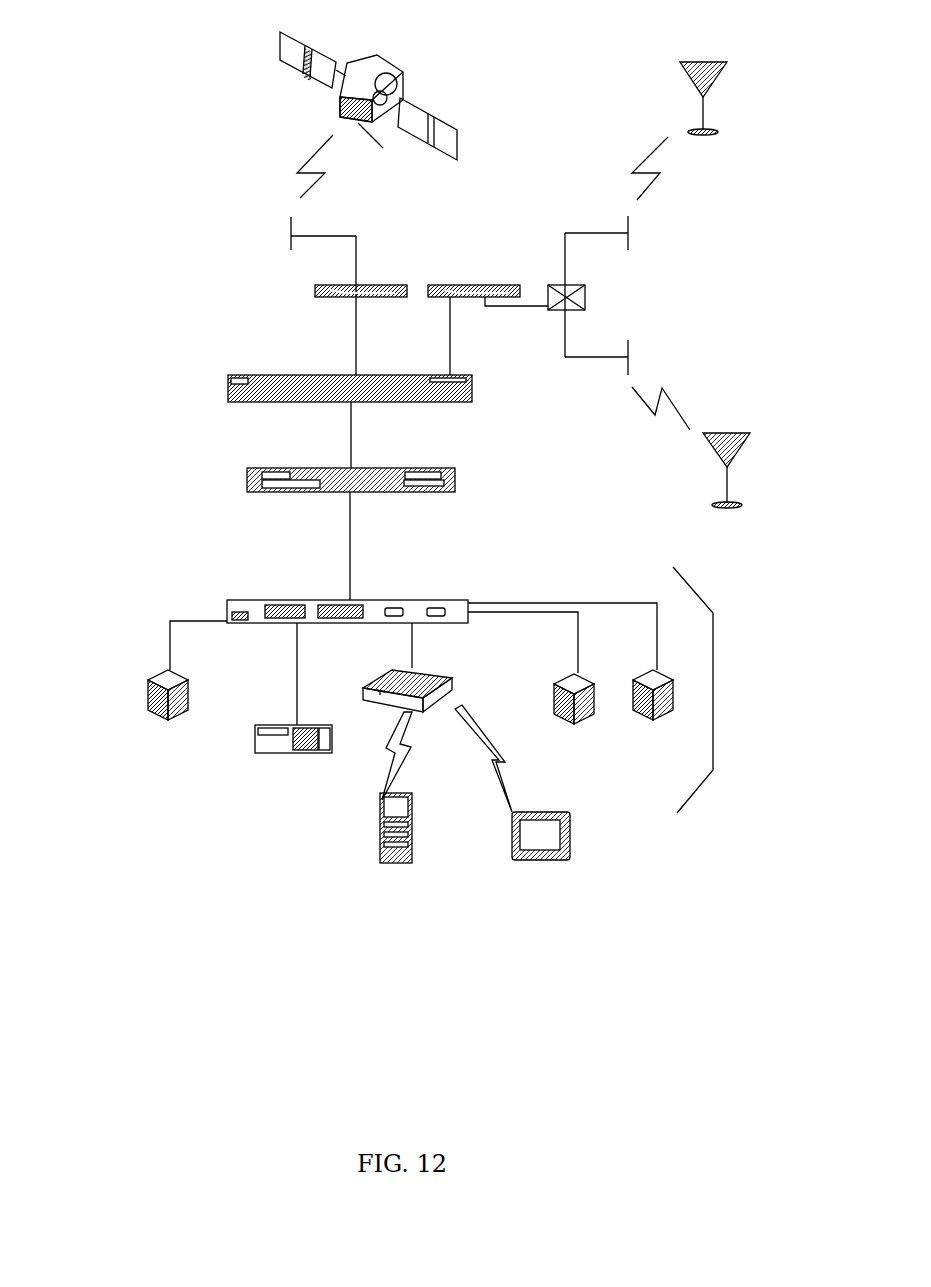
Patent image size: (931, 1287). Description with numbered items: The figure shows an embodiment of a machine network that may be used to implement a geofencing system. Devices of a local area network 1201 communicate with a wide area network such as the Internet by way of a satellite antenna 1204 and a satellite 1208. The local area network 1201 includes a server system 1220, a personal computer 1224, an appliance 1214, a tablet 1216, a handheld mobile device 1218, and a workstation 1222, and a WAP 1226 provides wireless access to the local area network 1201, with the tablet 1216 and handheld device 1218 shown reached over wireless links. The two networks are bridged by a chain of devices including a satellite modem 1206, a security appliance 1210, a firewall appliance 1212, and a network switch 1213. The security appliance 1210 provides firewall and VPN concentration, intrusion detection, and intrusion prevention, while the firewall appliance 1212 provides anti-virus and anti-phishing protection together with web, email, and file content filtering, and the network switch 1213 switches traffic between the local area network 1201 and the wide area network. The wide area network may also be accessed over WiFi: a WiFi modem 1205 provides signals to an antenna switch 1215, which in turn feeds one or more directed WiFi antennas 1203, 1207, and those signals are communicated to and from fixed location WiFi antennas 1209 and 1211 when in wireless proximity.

The local area network (LAN) 1201 is at (724, 690).
The directed WiFi antenna 1203 is at (675, 237).
The satellite antenna 1204 is at (234, 233).
The WiFi modem 1205 is at (478, 306).
The satellite modem 1206 is at (264, 290).
The directed WiFi antenna 1207 is at (675, 362).
The satellite 1208 is at (370, 110).
The fixed location WiFi antenna 1209 is at (726, 72).
The security appliance 1210 is at (252, 388).
The fixed location WiFi antenna 1211 is at (661, 470).
The firewall appliance 1212 is at (251, 480).
The network switch 1213 is at (413, 635).
The appliance 1214 is at (299, 756).
The antenna switch 1215 is at (608, 295).
The tablet 1216 is at (568, 852).
The handheld (mobile) device 1218 is at (428, 844).
The server system 1220 is at (657, 725).
The workstation 1222 is at (563, 719).
The personal computer 1224 is at (163, 724).
The WAP 1226 is at (436, 680).